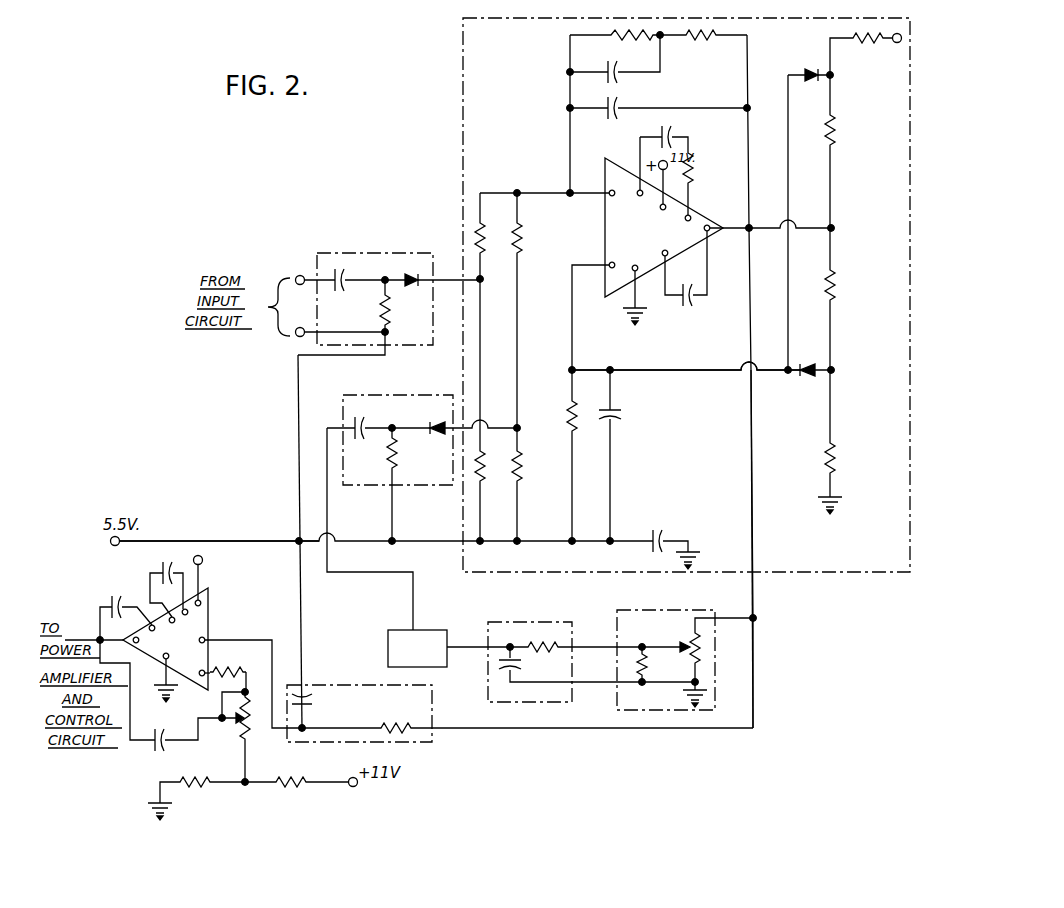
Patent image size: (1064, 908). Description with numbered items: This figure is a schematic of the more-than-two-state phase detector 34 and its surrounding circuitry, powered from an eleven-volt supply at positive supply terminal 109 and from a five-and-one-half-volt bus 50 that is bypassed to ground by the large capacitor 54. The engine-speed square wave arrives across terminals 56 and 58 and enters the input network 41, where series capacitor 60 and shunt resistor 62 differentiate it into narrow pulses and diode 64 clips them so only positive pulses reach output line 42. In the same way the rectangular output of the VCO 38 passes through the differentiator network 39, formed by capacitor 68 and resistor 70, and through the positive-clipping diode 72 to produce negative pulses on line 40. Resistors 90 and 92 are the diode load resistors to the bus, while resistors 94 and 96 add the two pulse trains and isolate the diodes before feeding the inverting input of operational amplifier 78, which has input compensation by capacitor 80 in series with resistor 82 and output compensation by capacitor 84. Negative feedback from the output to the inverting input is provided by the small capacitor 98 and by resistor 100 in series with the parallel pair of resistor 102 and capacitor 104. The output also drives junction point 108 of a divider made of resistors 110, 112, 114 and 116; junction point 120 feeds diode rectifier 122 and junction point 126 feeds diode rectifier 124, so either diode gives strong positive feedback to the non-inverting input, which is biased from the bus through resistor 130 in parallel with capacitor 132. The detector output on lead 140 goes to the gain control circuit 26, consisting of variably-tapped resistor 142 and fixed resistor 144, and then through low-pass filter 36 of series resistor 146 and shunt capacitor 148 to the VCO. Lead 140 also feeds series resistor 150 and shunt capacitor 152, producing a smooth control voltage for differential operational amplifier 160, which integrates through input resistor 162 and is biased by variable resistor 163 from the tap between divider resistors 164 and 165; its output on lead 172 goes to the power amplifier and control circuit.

The gain control circuit 26 is at (650, 610).
The more-than-two-state phase detector 34 is at (463, 135).
The low-pass filter 36 is at (512, 622).
The VCO 38 is at (440, 630).
The detector network 39 is at (407, 395).
The line 40 is at (490, 425).
The input network 41 is at (380, 243).
The output line 42 is at (438, 275).
The 5.5 volt bus 50 is at (201, 541).
The capacitor 54 is at (656, 530).
The terminal 56 is at (297, 277).
The terminal 58 is at (297, 336).
The series capacitor 60 is at (341, 291).
The shunt resistor 62 is at (390, 310).
The diode 64 is at (405, 277).
The capacitor 68 is at (366, 421).
The resistor 70 is at (388, 456).
The positive-clipping diode 72 is at (435, 436).
The operational amplifier 78 is at (700, 219).
The capacitor 80 is at (670, 132).
The resistor 82 is at (692, 169).
The capacitor 84 is at (685, 310).
The resistor 90 is at (485, 470).
The resistor 92 is at (522, 466).
The resistor 94 is at (485, 240).
The resistor 96 is at (524, 245).
The capacitor 98 is at (614, 104).
The resistor 100 is at (701, 40).
The resistor 102 is at (612, 42).
The capacitor 104 is at (614, 66).
The junction point 108 is at (834, 231).
The positive supply terminal 109 is at (893, 43).
The resistor 110 is at (851, 37).
The resistor 112 is at (834, 131).
The resistor 114 is at (834, 289).
The resistor 116 is at (836, 459).
The junction point 120 is at (834, 76).
The diode rectifier 122 is at (810, 72).
The diode rectifier 124 is at (806, 378).
The junction point 126 is at (835, 371).
The resistor 130 is at (568, 412).
The capacitor 132 is at (620, 414).
The lead 140 is at (760, 605).
The variably-tapped resistor 142 is at (690, 636).
The fixed resistor 144 is at (648, 666).
The series resistor 146 is at (549, 646).
The shunt capacitor 148 is at (522, 666).
The series resistor 150 is at (395, 726).
The shunt capacitor 152 is at (314, 700).
The differential operational amplifier 160 is at (210, 615).
The input resistor 162 is at (223, 671).
The variable resistor 163 is at (249, 732).
The divider resistor 164 is at (195, 780).
The divider resistor 165 is at (291, 780).
The lead 172 is at (82, 640).